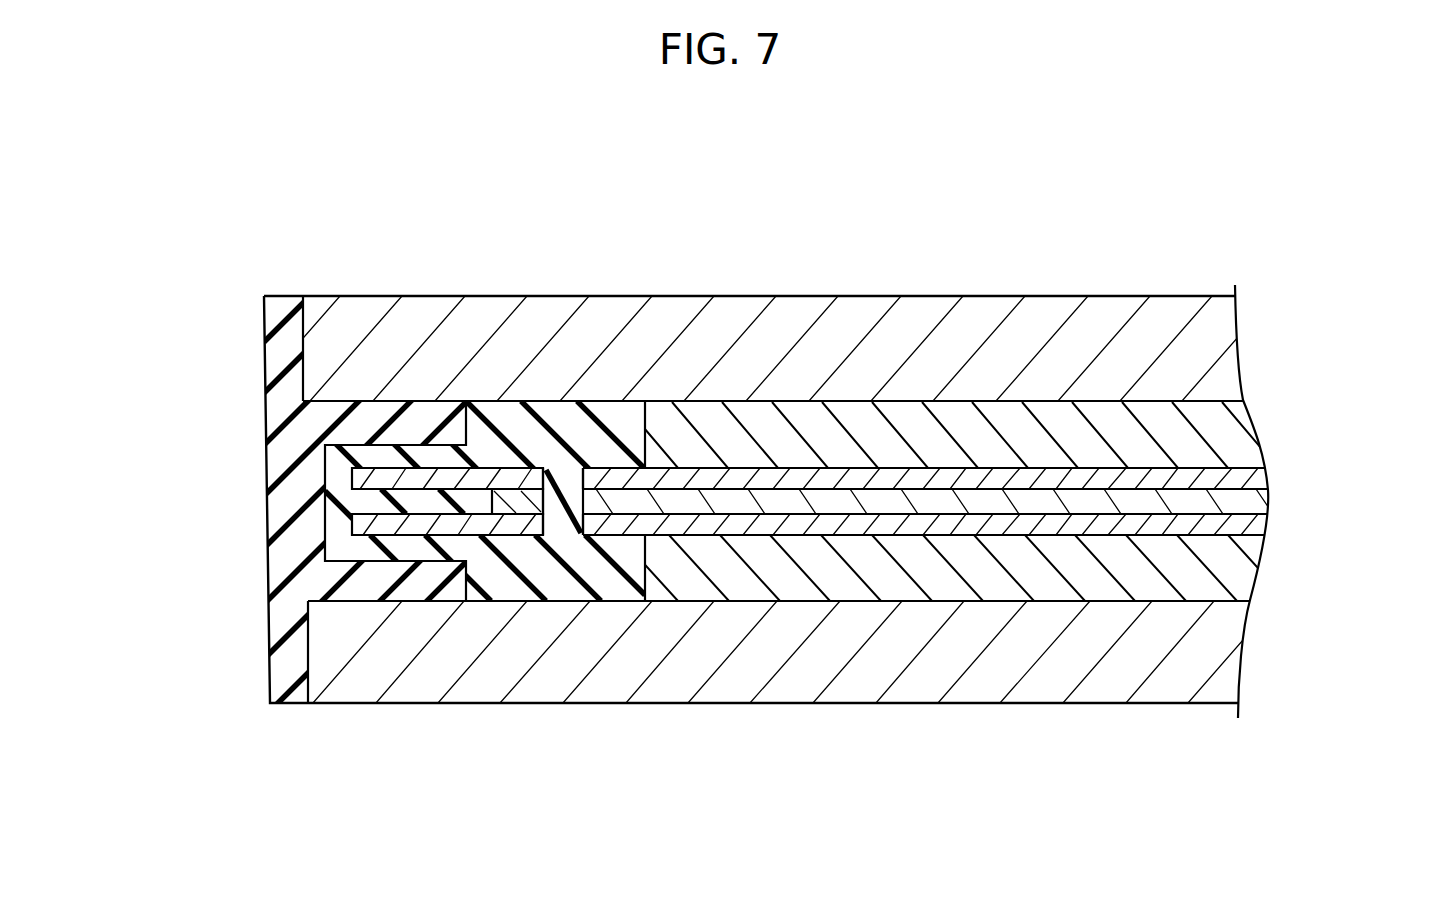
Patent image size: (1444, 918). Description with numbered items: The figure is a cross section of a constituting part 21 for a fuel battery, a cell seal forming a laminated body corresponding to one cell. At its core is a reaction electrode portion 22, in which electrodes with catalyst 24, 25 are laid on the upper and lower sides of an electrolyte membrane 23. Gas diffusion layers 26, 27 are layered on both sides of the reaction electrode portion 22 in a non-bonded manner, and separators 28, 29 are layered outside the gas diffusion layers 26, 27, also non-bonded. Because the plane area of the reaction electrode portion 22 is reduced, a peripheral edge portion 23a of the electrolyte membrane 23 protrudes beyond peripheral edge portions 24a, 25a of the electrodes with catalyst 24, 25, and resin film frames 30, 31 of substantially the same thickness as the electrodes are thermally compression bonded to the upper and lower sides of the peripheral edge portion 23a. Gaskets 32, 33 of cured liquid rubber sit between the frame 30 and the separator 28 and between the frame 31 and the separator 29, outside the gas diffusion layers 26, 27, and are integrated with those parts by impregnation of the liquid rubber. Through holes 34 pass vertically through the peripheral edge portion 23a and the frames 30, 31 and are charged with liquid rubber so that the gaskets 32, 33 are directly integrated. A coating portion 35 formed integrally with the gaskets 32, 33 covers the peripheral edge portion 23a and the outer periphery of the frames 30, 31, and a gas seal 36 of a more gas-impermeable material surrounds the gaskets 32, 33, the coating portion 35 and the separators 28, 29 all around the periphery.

The constituting part for fuel battery 21 is at (250, 274).
The reaction electrode portion 22 is at (1382, 407).
The electrolyte membrane 23 is at (1256, 500).
The peripheral edge portion of the electrolyte membrane 23a is at (513, 500).
The electrode with catalyst 24 is at (1260, 479).
The peripheral edge portion of the electrode with catalyst 24a is at (672, 480).
The electrode with catalyst 25 is at (1261, 526).
The peripheral edge portion of the electrode with catalyst 25a is at (670, 523).
The gas diffusion layer 26 is at (955, 425).
The gas diffusion layer 27 is at (973, 557).
The separator 28 is at (851, 318).
The separator 29 is at (872, 663).
The frame 30 is at (355, 475).
The frame 31 is at (355, 523).
The gasket 32 is at (570, 420).
The gasket 33 is at (563, 523).
The through hole 34 is at (588, 558).
The coating portion 35 is at (360, 500).
The gas seal 36 is at (308, 428).